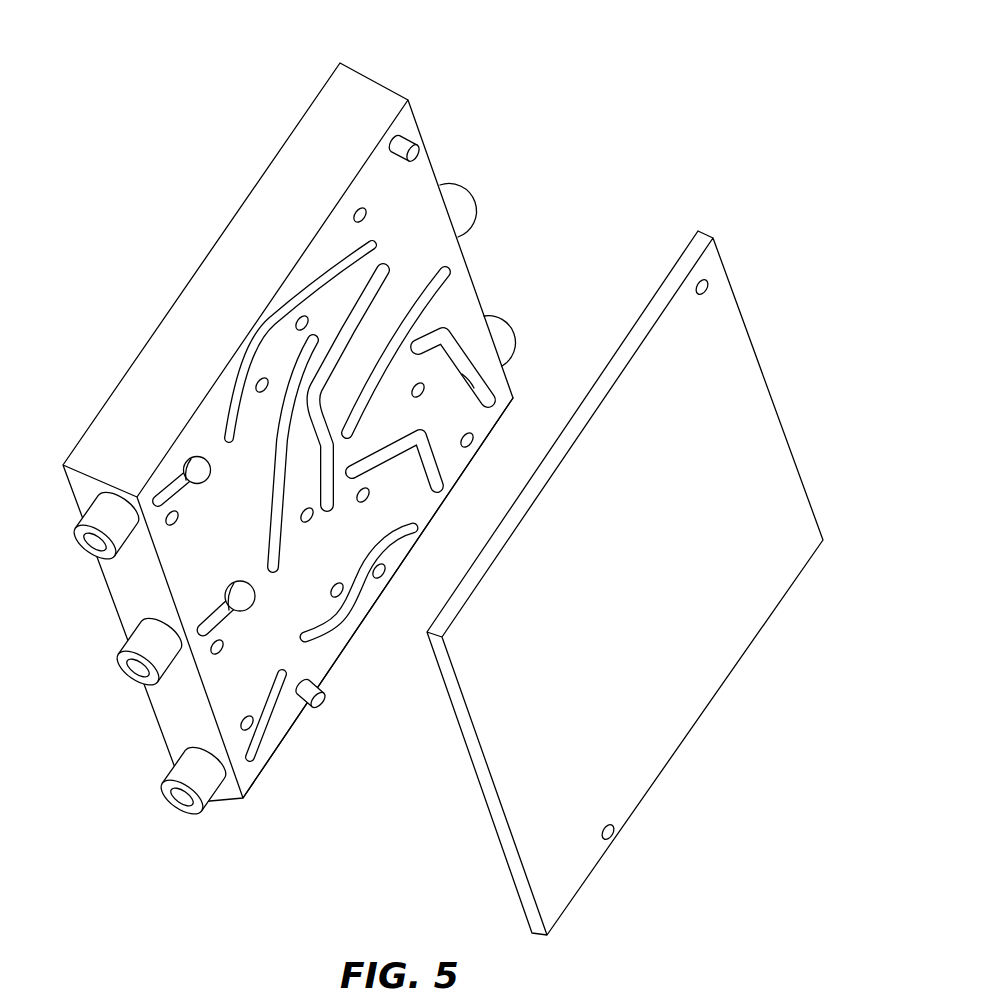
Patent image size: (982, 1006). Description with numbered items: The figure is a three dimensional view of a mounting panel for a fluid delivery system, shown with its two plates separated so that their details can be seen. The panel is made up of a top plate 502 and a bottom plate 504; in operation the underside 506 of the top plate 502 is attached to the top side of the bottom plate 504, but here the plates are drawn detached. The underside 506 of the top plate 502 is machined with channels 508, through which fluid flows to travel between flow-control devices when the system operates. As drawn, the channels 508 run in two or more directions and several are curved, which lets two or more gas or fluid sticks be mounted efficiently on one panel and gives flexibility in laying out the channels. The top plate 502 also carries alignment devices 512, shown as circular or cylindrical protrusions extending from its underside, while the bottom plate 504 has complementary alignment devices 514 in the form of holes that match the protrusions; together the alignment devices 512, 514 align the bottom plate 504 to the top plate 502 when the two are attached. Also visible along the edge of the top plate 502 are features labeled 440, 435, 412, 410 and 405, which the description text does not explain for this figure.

The top plate 502 is at (380, 80).
The bottom plate 504 is at (706, 229).
The underside 506 is at (340, 660).
The channels 508 is at (267, 472).
The alignment devices 512 is at (416, 145).
The alignment devices 514 is at (710, 282).
The boss 440 is at (467, 194).
The boss 435 is at (522, 333).
The fitting 412 is at (83, 543).
The fitting 410 is at (126, 680).
The fitting 405 is at (217, 802).